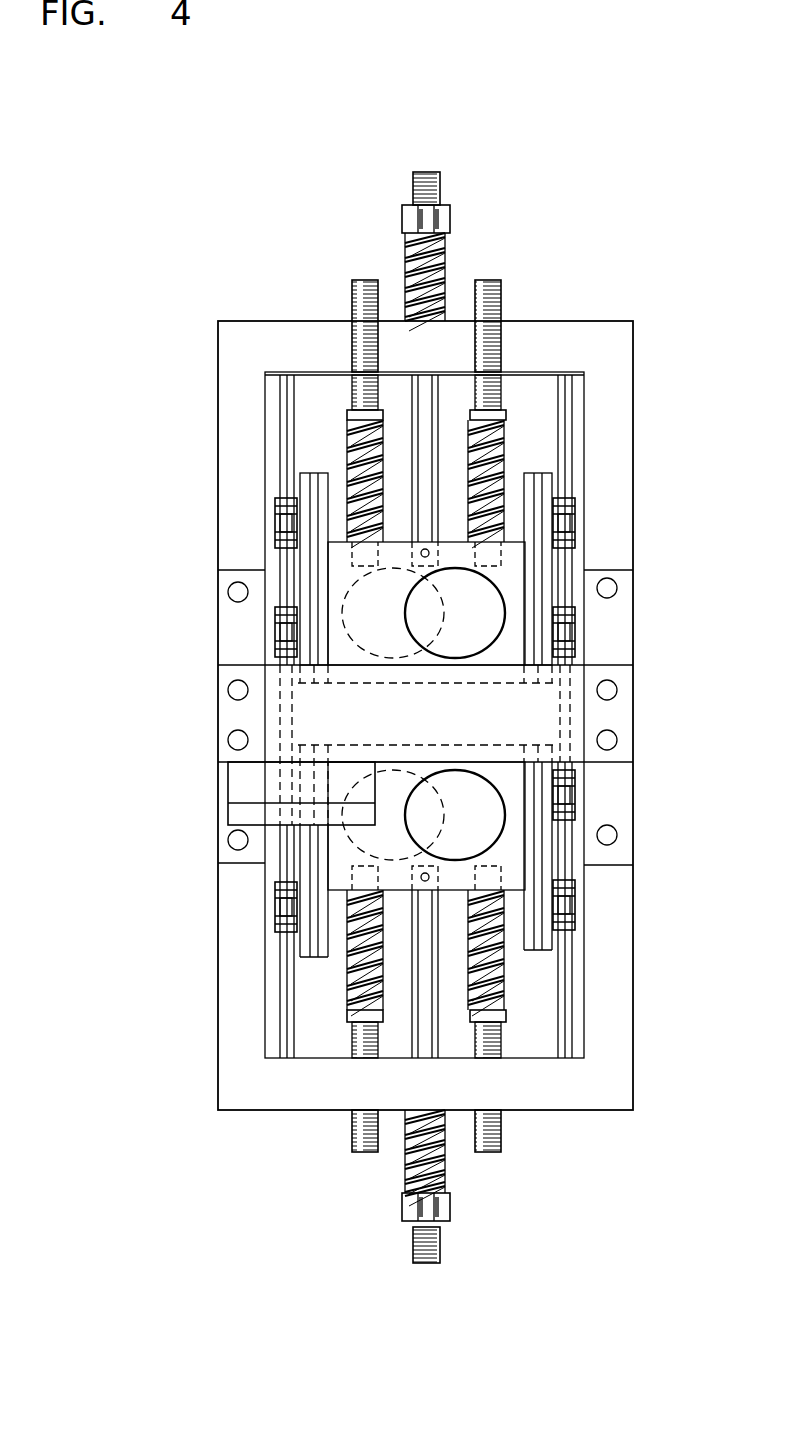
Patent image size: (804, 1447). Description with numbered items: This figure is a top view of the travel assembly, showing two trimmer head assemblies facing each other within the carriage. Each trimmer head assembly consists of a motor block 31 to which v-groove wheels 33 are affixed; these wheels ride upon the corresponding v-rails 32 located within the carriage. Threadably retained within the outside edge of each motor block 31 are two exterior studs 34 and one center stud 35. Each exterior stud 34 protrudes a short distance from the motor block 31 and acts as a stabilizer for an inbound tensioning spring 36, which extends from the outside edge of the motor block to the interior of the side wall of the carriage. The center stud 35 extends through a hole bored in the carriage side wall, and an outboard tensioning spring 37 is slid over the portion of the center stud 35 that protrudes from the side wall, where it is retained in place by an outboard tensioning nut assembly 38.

The motor block 31 is at (508, 585).
The v-rails 32 is at (295, 395).
The v-groove wheels 33 is at (277, 628).
The exterior studs 34 is at (352, 278).
The center stud 35 is at (425, 170).
The inbound tensioning spring 36 is at (350, 435).
The outboard tensioning spring 37 is at (445, 250).
The outboard tensioning nut assembly 38 is at (396, 201).